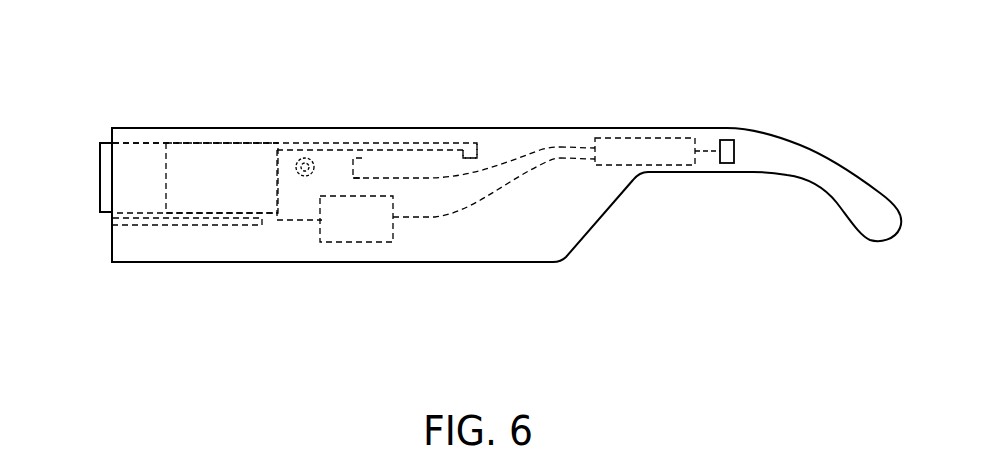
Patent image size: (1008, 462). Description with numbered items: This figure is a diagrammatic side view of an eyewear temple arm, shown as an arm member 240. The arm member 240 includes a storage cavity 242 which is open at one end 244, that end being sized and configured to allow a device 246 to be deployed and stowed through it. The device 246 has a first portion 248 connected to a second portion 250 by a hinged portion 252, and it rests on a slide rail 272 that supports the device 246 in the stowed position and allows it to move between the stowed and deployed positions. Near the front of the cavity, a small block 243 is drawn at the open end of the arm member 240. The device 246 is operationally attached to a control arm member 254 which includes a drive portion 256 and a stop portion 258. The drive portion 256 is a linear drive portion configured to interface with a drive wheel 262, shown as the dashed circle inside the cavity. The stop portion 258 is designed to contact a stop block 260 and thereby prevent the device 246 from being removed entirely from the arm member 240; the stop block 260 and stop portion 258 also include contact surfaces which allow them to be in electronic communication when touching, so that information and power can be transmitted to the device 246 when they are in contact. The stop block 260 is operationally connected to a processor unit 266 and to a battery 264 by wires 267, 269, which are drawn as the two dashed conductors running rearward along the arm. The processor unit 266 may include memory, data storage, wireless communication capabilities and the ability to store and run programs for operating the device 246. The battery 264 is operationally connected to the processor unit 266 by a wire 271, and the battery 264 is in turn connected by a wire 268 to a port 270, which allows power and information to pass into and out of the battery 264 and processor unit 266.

The arm member 240 is at (524, 127).
The storage cavity 242 is at (505, 238).
The hinge connector block 243 is at (100, 171).
The open end 244 is at (112, 228).
The device 246 is at (236, 142).
The first portion 248 is at (129, 142).
The second portion 250 is at (220, 214).
The hinged portion 252 is at (166, 142).
The control arm member 254 is at (319, 142).
The drive portion 256 is at (378, 150).
The stop portion 258 is at (478, 145).
The stop block 260 is at (363, 163).
The drive wheel 262 is at (297, 175).
The battery 264 is at (643, 138).
The processor unit 266 is at (353, 243).
The wire 267 is at (358, 180).
The wire 268 is at (703, 150).
The wire 269 is at (566, 147).
The port 270 is at (735, 150).
The wire 271 is at (528, 174).
The slide rail 272 is at (145, 226).